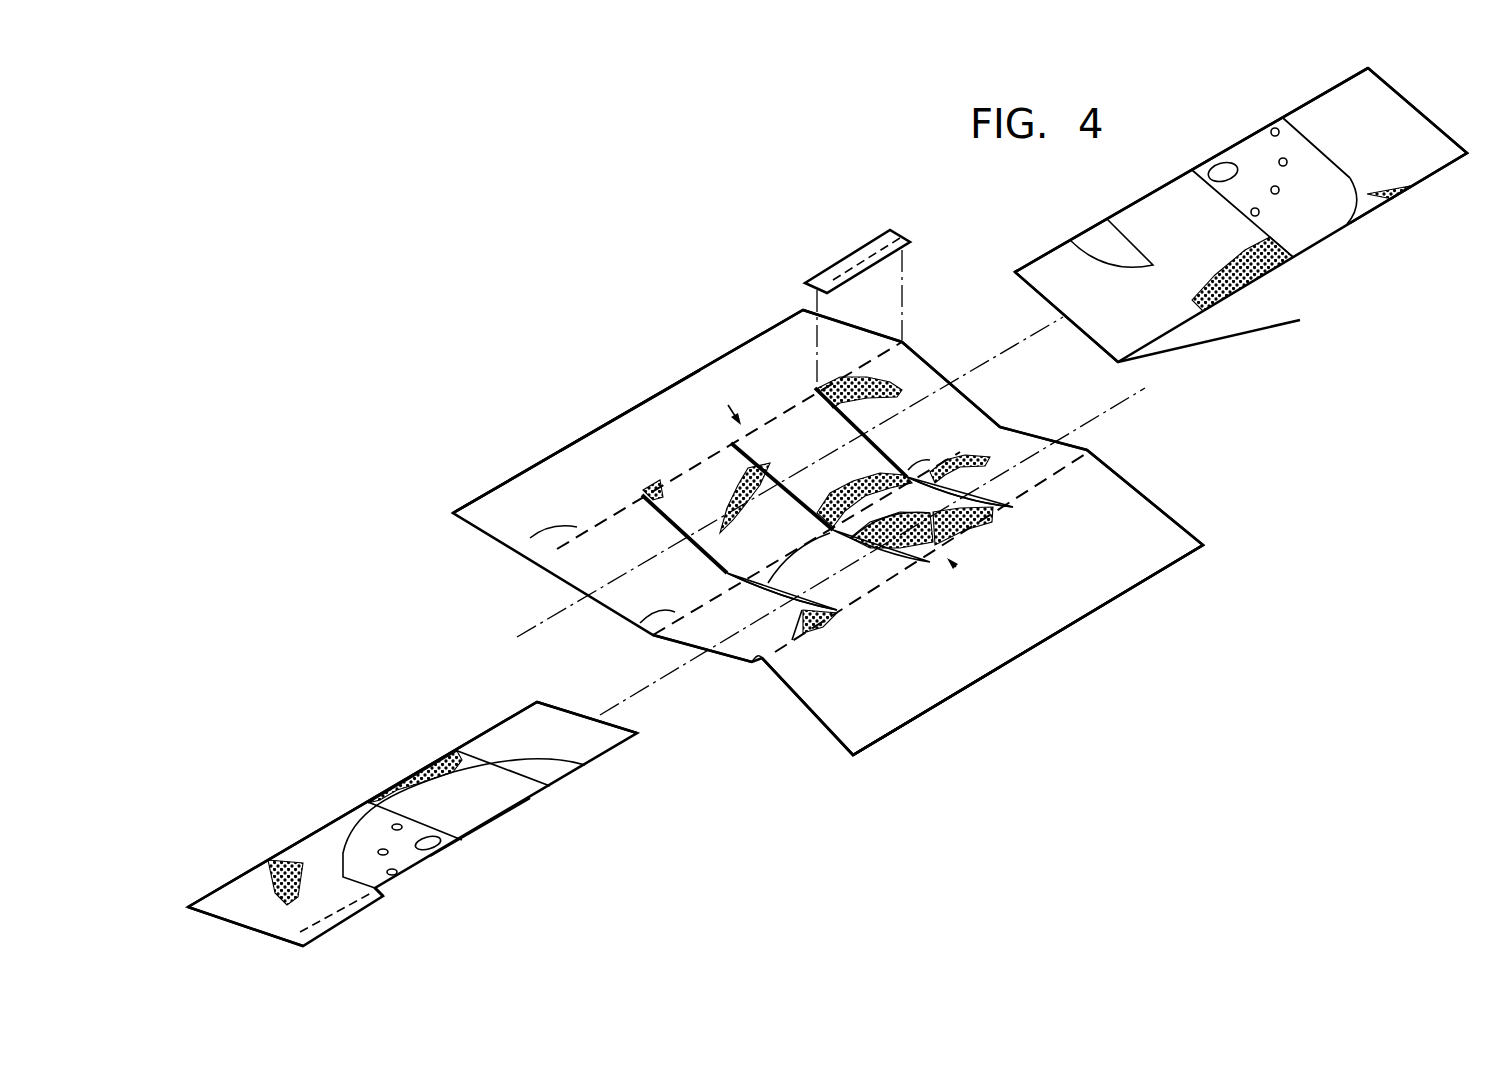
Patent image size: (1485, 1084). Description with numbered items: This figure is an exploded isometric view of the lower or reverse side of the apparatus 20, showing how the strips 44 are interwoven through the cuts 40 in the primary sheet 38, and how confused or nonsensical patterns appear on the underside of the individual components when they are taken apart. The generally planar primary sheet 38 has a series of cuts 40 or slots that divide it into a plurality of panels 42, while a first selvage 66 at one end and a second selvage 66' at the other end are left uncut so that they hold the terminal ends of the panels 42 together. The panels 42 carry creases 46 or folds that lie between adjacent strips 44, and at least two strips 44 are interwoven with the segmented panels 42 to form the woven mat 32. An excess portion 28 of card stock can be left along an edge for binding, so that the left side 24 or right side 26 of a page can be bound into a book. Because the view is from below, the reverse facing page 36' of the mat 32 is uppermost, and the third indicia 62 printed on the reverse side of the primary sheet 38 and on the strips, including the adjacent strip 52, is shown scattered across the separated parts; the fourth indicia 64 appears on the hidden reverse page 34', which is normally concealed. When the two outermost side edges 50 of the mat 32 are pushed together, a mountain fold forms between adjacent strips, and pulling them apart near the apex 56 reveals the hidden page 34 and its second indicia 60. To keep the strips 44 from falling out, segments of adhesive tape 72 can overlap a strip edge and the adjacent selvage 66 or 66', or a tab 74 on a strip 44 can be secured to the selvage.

The apparatus 20 is at (777, 777).
The left side 24 is at (553, 451).
The right side 26 is at (965, 698).
The excess portion 28 is at (521, 470).
The mat 32 is at (912, 344).
The hidden page 34 is at (867, 511).
The hidden reverse page 34' is at (789, 511).
The reverse facing page 36' is at (835, 515).
The primary sheet 38 is at (1055, 640).
The cuts 40 is at (906, 470).
The panels 42 is at (926, 506).
The strips 44 is at (817, 485).
The creases 46 is at (530, 538).
The outermost side edges 50 is at (728, 405).
The adjacent strip 52 is at (1373, 90).
The apex 56 is at (1008, 424).
The second indicia 60 is at (1092, 236).
The third indicia 62 is at (972, 468).
The fourth indicia 64 is at (843, 383).
The first selvage 66 is at (630, 409).
The second selvage 66' is at (940, 714).
The adhesive tape 72 is at (835, 272).
The tab 74 is at (380, 903).